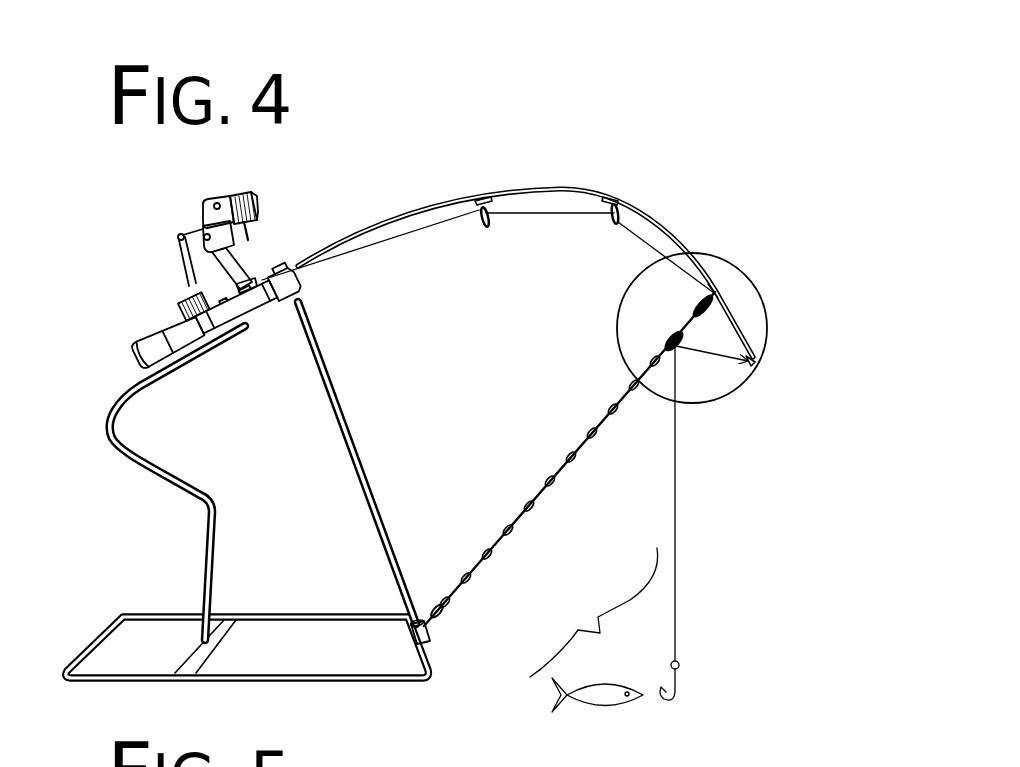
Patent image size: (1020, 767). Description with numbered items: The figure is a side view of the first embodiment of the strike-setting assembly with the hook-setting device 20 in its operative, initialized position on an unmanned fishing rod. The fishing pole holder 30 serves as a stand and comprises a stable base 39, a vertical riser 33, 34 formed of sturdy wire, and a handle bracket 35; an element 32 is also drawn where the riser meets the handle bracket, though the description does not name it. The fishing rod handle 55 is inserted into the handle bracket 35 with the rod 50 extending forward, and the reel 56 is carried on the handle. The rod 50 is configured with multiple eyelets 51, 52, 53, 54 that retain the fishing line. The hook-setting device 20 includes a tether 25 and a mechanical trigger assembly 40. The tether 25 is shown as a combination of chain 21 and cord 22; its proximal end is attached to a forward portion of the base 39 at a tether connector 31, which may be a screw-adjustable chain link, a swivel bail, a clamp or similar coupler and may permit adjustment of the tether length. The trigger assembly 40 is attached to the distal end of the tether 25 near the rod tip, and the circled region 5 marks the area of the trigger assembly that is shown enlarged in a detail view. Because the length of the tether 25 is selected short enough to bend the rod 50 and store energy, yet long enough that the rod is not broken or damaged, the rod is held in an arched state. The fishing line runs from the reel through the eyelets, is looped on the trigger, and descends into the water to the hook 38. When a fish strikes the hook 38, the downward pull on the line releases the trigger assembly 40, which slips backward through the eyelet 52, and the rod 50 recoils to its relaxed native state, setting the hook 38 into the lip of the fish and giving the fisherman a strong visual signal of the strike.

The detail circle for FIG. 5 is at (757, 232).
The hook-setting device 20 is at (569, 478).
The chain 21 is at (468, 587).
The cord 22 is at (600, 437).
The tether 25 is at (603, 674).
The fishing pole holder 30 is at (241, 490).
The tether connector 31 is at (412, 623).
The clamp 32 is at (301, 303).
The vertical riser 33 is at (112, 432).
The vertical riser 34 is at (346, 413).
The handle bracket 35 is at (238, 317).
The hook 38 is at (673, 688).
The base 39 is at (96, 640).
The trigger assembly 40 is at (670, 330).
The rod 50 is at (352, 233).
The eyelet 51 is at (754, 366).
The eyelet 52 is at (716, 296).
The eyelet 53 is at (628, 185).
The eyelet 54 is at (488, 186).
The fishing rod handle 55 is at (150, 336).
The reel 56 is at (205, 223).